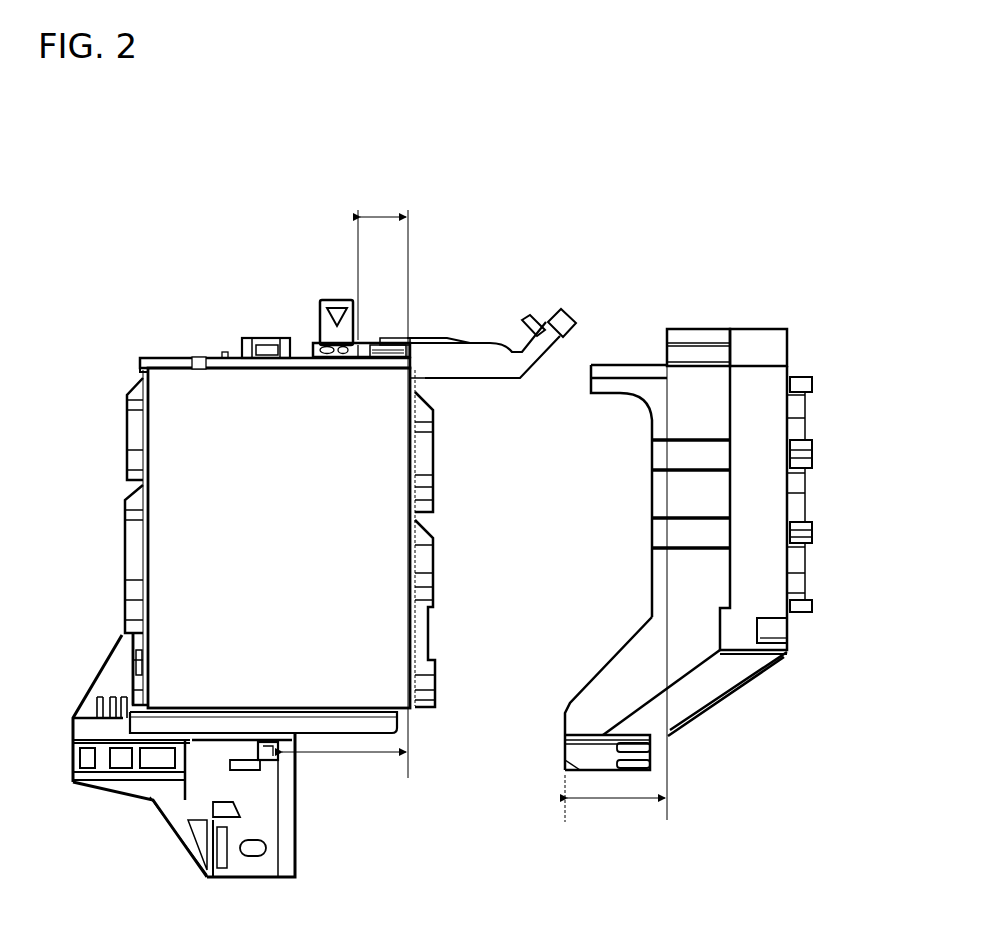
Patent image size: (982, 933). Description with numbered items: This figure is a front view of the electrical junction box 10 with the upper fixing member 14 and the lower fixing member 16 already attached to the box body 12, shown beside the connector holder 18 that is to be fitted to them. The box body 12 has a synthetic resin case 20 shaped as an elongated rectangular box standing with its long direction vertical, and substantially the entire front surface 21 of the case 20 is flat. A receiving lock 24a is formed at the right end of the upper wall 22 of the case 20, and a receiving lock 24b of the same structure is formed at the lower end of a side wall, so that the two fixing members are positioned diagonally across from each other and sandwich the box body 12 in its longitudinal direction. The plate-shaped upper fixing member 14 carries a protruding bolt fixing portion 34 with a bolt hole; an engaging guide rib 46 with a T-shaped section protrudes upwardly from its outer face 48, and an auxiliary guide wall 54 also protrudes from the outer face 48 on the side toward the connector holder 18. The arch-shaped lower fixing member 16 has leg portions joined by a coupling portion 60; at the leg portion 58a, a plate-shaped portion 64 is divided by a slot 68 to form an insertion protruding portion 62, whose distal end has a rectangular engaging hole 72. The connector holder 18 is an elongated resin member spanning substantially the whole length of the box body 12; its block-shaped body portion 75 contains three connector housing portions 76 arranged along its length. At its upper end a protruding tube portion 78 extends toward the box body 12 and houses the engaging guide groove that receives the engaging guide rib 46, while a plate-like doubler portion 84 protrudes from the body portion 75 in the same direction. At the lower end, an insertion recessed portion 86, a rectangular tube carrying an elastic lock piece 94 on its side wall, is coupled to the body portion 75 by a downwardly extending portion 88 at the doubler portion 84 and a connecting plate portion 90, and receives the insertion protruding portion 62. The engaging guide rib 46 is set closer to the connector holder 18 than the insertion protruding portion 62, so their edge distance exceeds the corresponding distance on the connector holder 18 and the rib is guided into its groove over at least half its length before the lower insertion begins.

The electrical junction box 10 is at (745, 208).
The box body 12 is at (150, 300).
The upper fixing member 14 is at (455, 298).
The lower fixing member 16 is at (67, 663).
The connector holder 18 is at (787, 288).
The case 20 is at (160, 348).
The front surface 21 is at (378, 468).
The upper wall 22 is at (196, 358).
The receiving lock 24a is at (377, 353).
The receiving lock 24b is at (138, 645).
The bolt fixing portion 34 is at (537, 354).
The engaging guide rib 46 is at (391, 340).
The outer face 48 is at (325, 347).
The auxiliary guide wall 54 is at (425, 341).
The leg portion 58a is at (120, 780).
The coupling portion 60 is at (113, 688).
The insertion protruding portion 62 is at (240, 750).
The plate-shaped portion 64 is at (246, 878).
The slot 68 is at (248, 770).
The engaging hole 72 is at (268, 752).
The body portion 75 is at (770, 388).
The connector housing portions 76 is at (797, 597).
The protruding tube portion 78 is at (683, 337).
The doubler portion 84 is at (660, 505).
The insertion recessed portion 86 is at (658, 762).
The downwardly extending portion 88 is at (622, 683).
The connecting plate portion 90 is at (700, 695).
The lock piece 94 is at (640, 753).